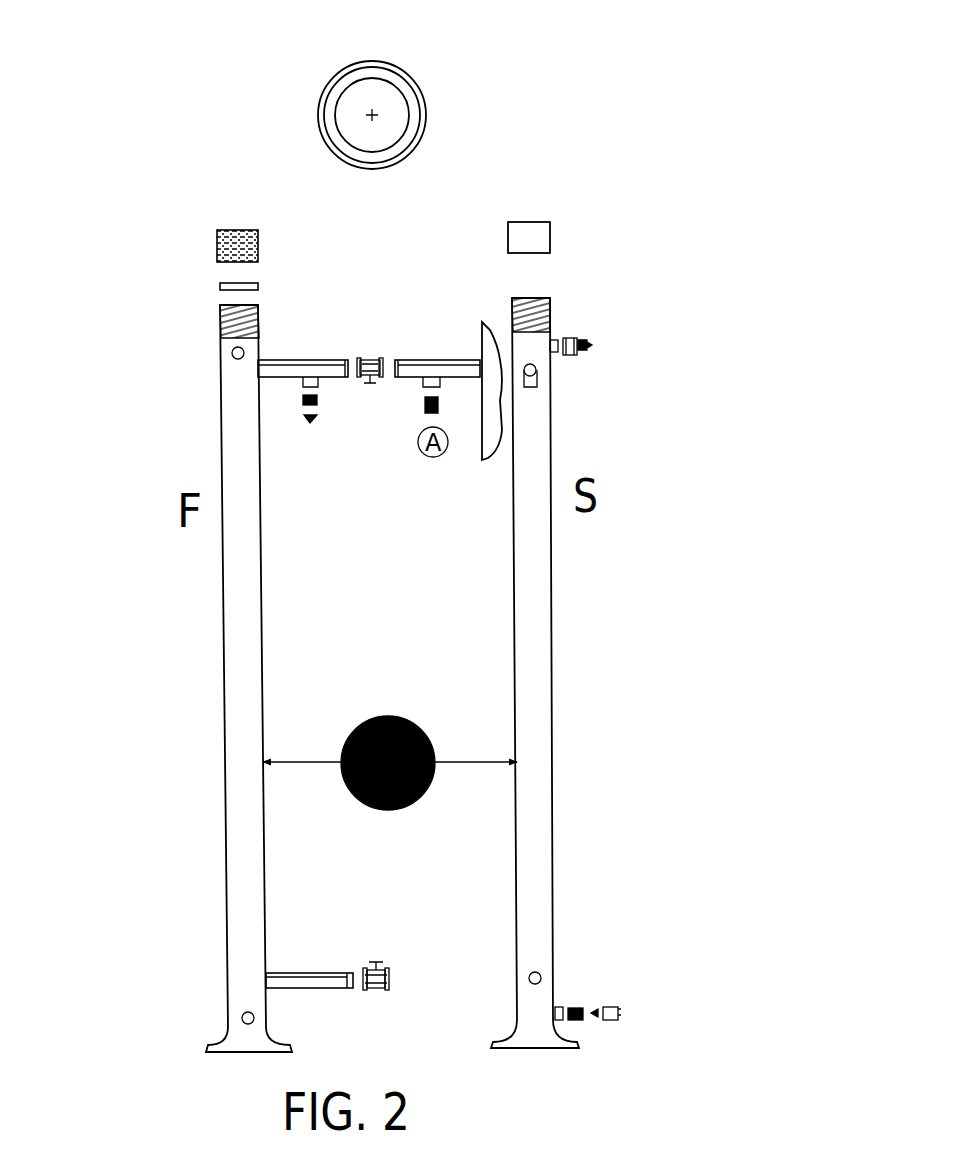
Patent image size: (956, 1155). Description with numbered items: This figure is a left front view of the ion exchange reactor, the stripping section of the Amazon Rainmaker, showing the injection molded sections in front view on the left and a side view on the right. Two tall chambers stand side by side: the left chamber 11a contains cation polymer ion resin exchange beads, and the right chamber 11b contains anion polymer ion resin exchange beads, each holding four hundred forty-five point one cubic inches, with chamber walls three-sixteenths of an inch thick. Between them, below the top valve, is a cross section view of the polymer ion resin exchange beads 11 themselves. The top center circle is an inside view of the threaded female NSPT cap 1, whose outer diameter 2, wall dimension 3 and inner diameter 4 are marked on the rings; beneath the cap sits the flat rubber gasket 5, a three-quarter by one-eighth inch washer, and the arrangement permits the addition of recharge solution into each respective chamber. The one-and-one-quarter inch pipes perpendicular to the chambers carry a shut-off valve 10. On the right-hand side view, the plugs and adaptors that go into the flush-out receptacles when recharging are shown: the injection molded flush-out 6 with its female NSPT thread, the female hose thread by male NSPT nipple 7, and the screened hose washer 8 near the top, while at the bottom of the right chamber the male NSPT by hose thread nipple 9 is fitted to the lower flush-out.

The female cap 1 is at (213, 227).
The cap outer diameter 2 is at (423, 97).
The cap wall thickness 3 is at (422, 113).
The cap inner diameter 4 is at (333, 87).
The flat rubber gasket 5 is at (220, 283).
The injection molded flush-out 6 is at (555, 338).
The hose thread nipple 7 is at (573, 353).
The screened hose washer 8 is at (588, 342).
The male hose thread nipple 9 is at (573, 1008).
The shut-off valve 10 is at (372, 358).
The polymer ion resin exchange beads 11 is at (425, 702).
The left chamber 11a is at (262, 558).
The right chamber 11b is at (515, 919).